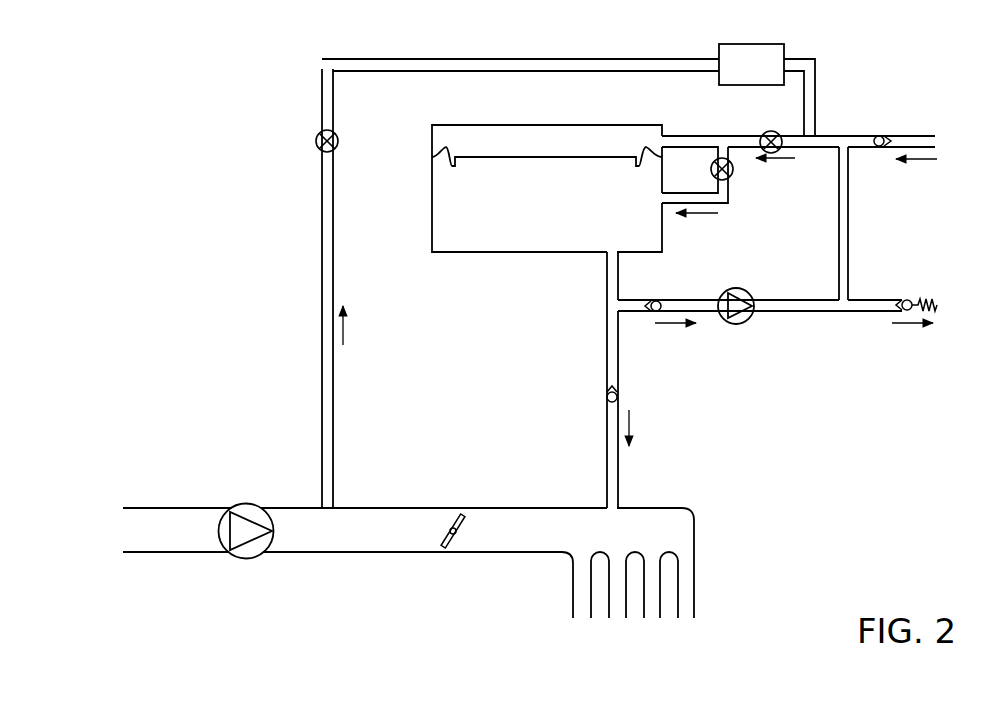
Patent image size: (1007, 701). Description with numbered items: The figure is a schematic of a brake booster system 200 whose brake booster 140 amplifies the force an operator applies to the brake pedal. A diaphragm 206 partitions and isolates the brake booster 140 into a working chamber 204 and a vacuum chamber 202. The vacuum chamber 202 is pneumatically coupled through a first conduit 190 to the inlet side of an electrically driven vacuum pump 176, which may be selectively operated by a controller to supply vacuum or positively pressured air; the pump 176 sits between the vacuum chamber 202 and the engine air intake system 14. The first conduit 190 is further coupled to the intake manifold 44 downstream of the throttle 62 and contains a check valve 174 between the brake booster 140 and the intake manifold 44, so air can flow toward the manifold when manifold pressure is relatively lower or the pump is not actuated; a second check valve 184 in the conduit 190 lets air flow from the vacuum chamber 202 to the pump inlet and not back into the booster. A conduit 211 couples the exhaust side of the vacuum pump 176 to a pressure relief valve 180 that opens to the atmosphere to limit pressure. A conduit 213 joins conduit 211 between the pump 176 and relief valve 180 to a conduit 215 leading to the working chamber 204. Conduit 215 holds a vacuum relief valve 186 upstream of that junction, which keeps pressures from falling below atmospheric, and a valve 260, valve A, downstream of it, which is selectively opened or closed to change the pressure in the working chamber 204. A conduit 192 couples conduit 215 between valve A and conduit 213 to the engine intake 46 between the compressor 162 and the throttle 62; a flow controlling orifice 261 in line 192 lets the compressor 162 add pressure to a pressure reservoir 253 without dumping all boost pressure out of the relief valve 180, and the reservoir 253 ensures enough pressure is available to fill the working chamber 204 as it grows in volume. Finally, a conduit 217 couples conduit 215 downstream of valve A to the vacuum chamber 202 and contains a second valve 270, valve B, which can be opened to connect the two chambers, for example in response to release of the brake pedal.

The brake booster system 200 is at (178, 130).
The pressure reservoir 253 is at (767, 44).
The conduit 215 is at (832, 135).
The vacuum relief valve 186 is at (880, 136).
The valve 260 is at (763, 132).
The second valve 270 is at (733, 173).
The conduit 217 is at (729, 196).
The conduit 213 is at (849, 210).
The brake booster 140 is at (432, 184).
The working chamber 204 is at (512, 134).
The vacuum chamber 202 is at (500, 228).
The diaphragm 206 is at (568, 158).
The second check valve 184 is at (657, 299).
The electrically driven vacuum pump 176 is at (740, 325).
The pressure relief valve 180 is at (909, 299).
The conduit 211 is at (795, 312).
The first conduit 190 is at (607, 325).
The check valve 174 is at (611, 389).
The conduit 192 is at (322, 413).
The flow controlling orifice 261 is at (316, 142).
The compressor 162 is at (247, 503).
The engine intake 46 is at (300, 508).
The throttle 62 is at (450, 523).
The intake manifold 44 is at (675, 525).
The engine air intake system 14 is at (258, 585).